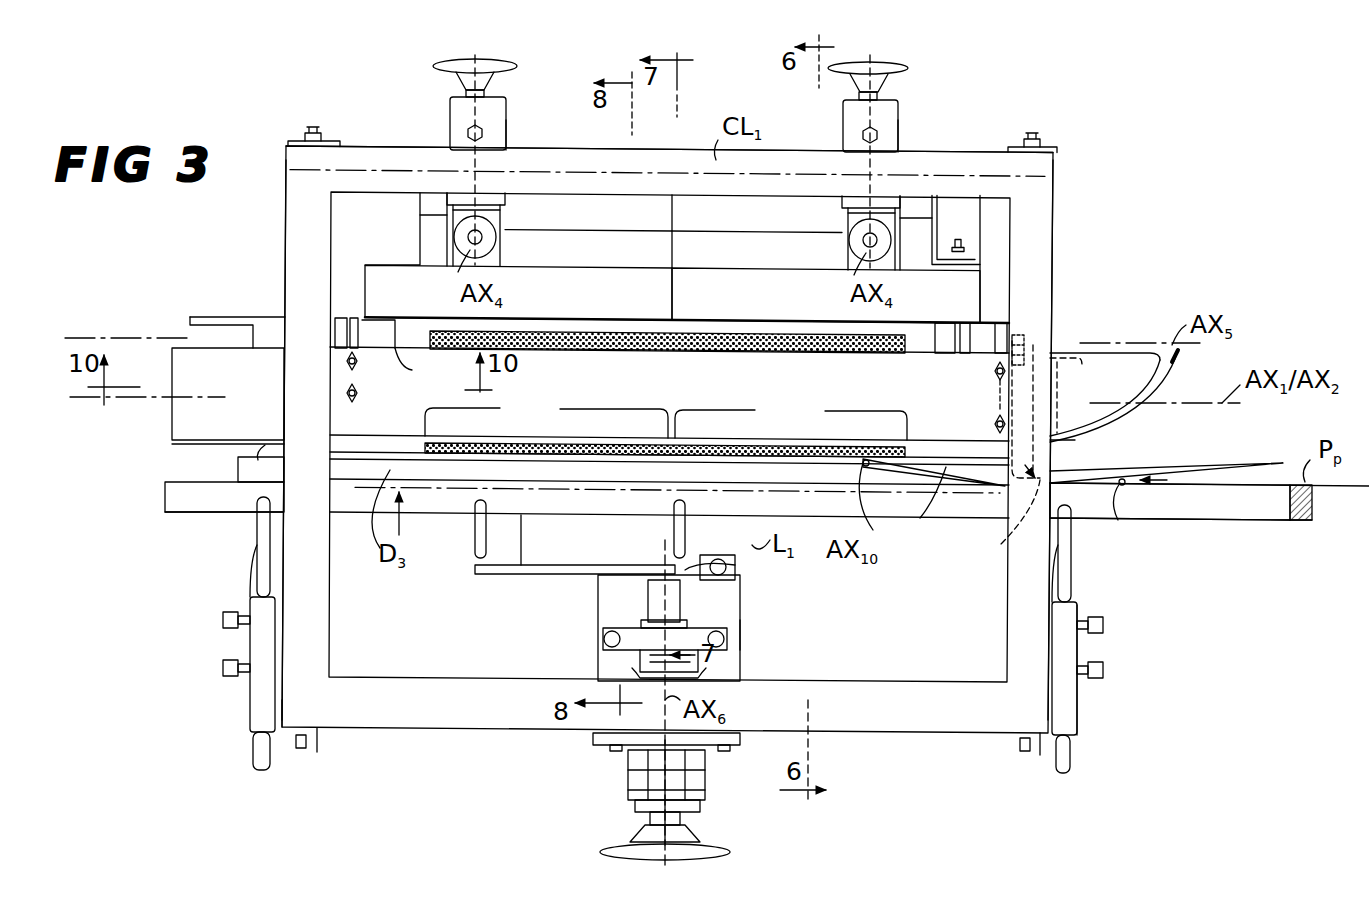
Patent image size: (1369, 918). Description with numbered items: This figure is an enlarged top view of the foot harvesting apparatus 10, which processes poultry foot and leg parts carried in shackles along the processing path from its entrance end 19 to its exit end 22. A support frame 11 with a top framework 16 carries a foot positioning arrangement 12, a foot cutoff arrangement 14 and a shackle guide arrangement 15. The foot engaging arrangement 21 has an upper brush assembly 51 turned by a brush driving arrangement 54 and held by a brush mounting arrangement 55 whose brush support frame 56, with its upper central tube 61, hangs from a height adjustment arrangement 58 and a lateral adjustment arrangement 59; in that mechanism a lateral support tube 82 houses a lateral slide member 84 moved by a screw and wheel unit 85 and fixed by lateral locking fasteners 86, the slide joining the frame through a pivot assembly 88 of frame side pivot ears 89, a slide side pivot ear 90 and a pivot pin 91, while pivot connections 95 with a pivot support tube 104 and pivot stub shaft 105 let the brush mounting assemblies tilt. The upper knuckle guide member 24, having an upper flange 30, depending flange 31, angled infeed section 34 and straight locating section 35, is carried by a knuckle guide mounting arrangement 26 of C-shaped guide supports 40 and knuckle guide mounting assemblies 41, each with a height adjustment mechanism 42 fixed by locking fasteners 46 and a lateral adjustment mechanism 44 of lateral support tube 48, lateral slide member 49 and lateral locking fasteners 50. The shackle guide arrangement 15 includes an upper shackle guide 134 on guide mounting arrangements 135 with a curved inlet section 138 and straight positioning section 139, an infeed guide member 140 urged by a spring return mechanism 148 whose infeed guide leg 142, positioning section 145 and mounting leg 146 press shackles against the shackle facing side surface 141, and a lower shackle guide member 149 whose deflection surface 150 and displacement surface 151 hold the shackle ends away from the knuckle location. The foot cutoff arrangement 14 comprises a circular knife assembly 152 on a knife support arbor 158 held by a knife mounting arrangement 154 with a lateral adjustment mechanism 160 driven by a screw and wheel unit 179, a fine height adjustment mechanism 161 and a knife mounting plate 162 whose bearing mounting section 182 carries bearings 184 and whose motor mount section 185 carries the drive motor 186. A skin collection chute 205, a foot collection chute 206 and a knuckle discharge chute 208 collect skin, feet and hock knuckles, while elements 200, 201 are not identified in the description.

The foot harvesting apparatus 10 is at (340, 100).
The support frame 11 is at (283, 262).
The foot positioning arrangement 12 is at (190, 532).
The foot cutoff arrangement 14 is at (620, 788).
The shackle guide arrangement 15 is at (200, 450).
The top framework 16 is at (290, 222).
The entrance end 19 is at (1245, 425).
The foot engaging arrangement 21 is at (912, 318).
The exit end 22 is at (148, 488).
The upper knuckle guide member 24 is at (1295, 524).
The knuckle guide mounting arrangement 26 is at (248, 740).
The upper flange 30 is at (1170, 520).
The depending flange 31 is at (1320, 505).
The infeed section 34 is at (1232, 522).
The locating section 35 is at (348, 508).
The C-shaped guide supports 40 is at (260, 536).
The knuckle guide mounting assemblies 41 is at (250, 595).
The height adjustment mechanism 42 is at (316, 738).
The lateral adjustment mechanism 44 is at (250, 700).
The height adjustment locking fasteners 46 is at (300, 745).
The lateral support tube 48 is at (1070, 697).
The lateral slide member 49 is at (256, 565).
The lateral locking fasteners 50 is at (222, 625).
The upper brush assembly 51 is at (648, 354).
The brush driving arrangement 54 is at (238, 330).
The brush mounting arrangement 55 is at (990, 264).
The brush support frame 56 is at (745, 342).
The height adjustment arrangement 58 is at (1062, 172).
The lateral adjustment arrangement 59 is at (508, 120).
The upper central tube 61 is at (687, 301).
The lateral support tube 82 is at (506, 135).
The lateral slide member 84 is at (505, 214).
The lateral adjustment screw and wheel unit 85 is at (440, 62).
The lateral locking fasteners 86 is at (468, 133).
The pivot assembly 88 is at (498, 250).
The frame side pivot ears 89 is at (488, 258).
The slide side pivot ear 90 is at (450, 218).
The pivot pin 91 is at (468, 250).
The pivot connections 95 is at (385, 320).
The pivot support tube 104 is at (356, 370).
The pivot stub shaft 105 is at (420, 360).
The upper shackle guide 134 is at (180, 412).
The guide mounting arrangements 135 is at (356, 396).
The inlet section 138 is at (1170, 372).
The positioning section 139 is at (240, 445).
The infeed guide member 140 is at (1000, 527).
The shackle facing side surface 141 is at (1124, 528).
The infeed guide leg 142 is at (1182, 463).
The positioning section 145 is at (1148, 472).
The mounting leg 146 is at (998, 398).
The spring return mechanism 148 is at (1065, 402).
The lower shackle guide member 149 is at (625, 470).
The deflection surface 150 is at (934, 505).
The displacement surface 151 is at (888, 508).
The circular knife assembly 152 is at (645, 608).
The knife mounting arrangement 154 is at (742, 675).
The knife support arbor 158 is at (680, 598).
The lateral adjustment mechanism 160 is at (702, 805).
The fine height adjustment mechanism 161 is at (752, 550).
The knife mounting plate 162 is at (742, 620).
The lateral adjustment screw and wheel unit 179 is at (640, 855).
The bearing mounting section 182 is at (612, 668).
The bearings 184 is at (603, 637).
The motor mount section 185 is at (742, 740).
The drive motor 186 is at (628, 768).
The drive roll 200 is at (791, 417).
The contact roll 201 is at (546, 416).
The skin collection chute 205 is at (708, 270).
The foot collection chute 206 is at (632, 270).
The knuckle discharge chute 208 is at (522, 575).